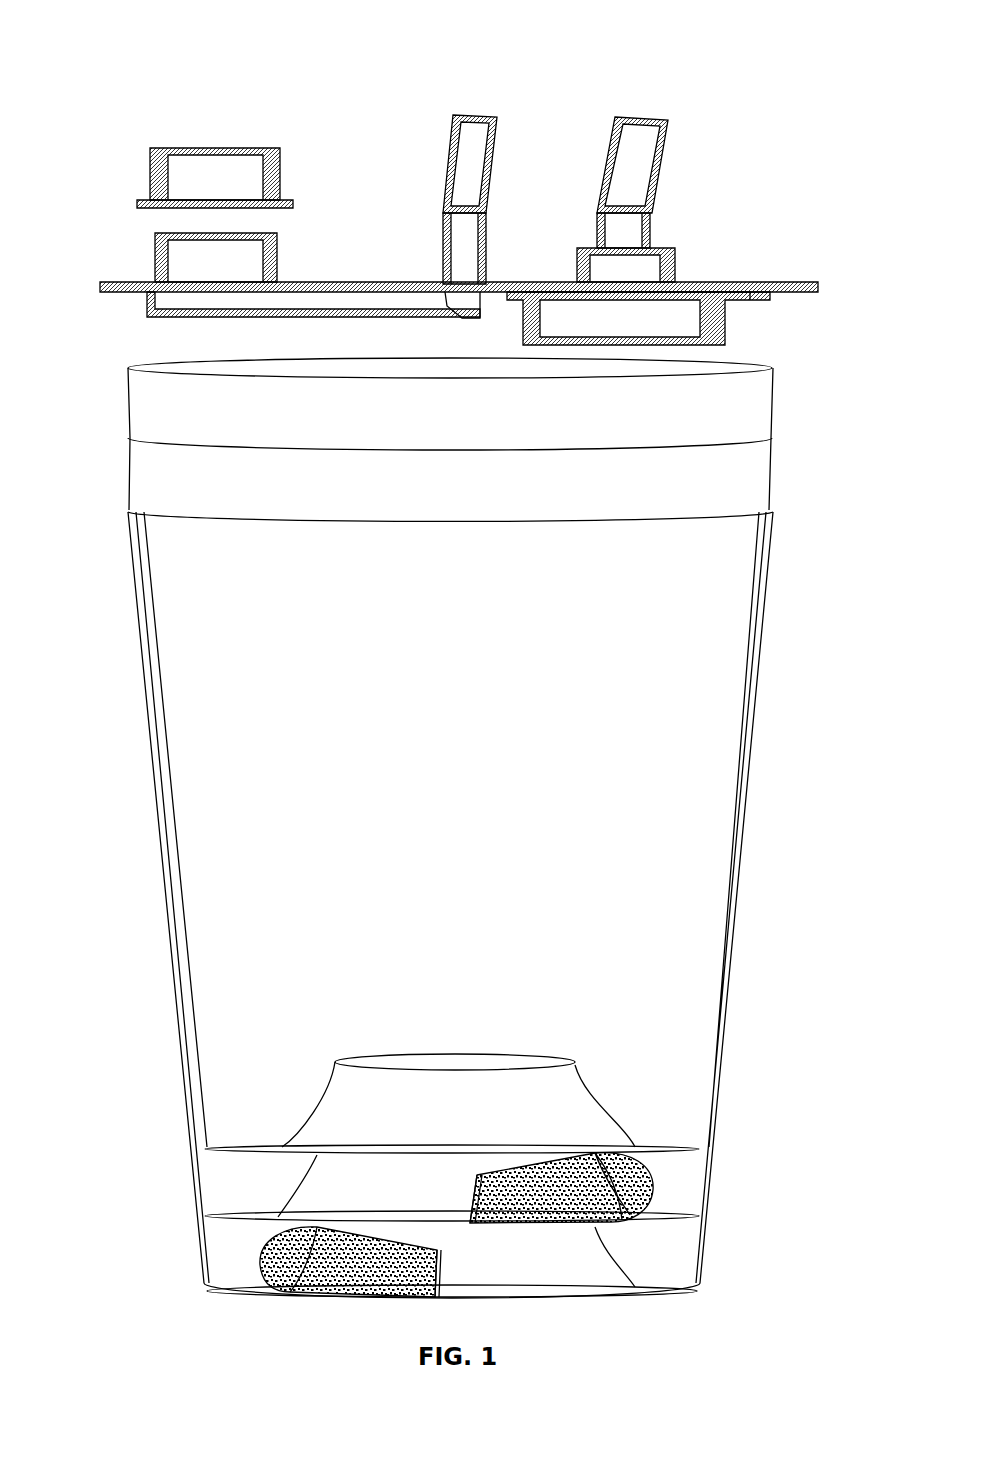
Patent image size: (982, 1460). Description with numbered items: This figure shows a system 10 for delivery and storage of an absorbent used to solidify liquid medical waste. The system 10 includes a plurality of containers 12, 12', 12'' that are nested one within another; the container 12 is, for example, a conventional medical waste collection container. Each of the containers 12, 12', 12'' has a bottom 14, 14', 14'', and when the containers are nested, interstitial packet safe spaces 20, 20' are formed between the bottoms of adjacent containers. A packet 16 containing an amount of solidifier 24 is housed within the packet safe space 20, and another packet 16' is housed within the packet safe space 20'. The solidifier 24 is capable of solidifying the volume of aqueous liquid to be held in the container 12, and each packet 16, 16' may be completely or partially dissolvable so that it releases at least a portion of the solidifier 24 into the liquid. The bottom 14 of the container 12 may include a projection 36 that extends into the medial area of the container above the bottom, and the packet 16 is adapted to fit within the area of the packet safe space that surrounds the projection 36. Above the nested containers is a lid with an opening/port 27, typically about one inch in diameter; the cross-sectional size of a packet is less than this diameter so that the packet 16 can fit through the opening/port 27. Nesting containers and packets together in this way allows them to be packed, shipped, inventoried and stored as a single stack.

The system 10 is at (96, 145).
The opening/port 27 is at (187, 250).
The container 12 is at (485, 394).
The second container 12' is at (488, 464).
The third container 12'' is at (500, 905).
The projection 36 is at (565, 1090).
The bottom 14 is at (511, 1145).
The bottom 14' is at (518, 1219).
The bottom 14'' is at (522, 1292).
The packet safe space 20 is at (380, 1182).
The packet safe space 20' is at (376, 1257).
The solidifier 24 is at (652, 1210).
The packet 16 is at (628, 1222).
The packet 16' is at (335, 1312).